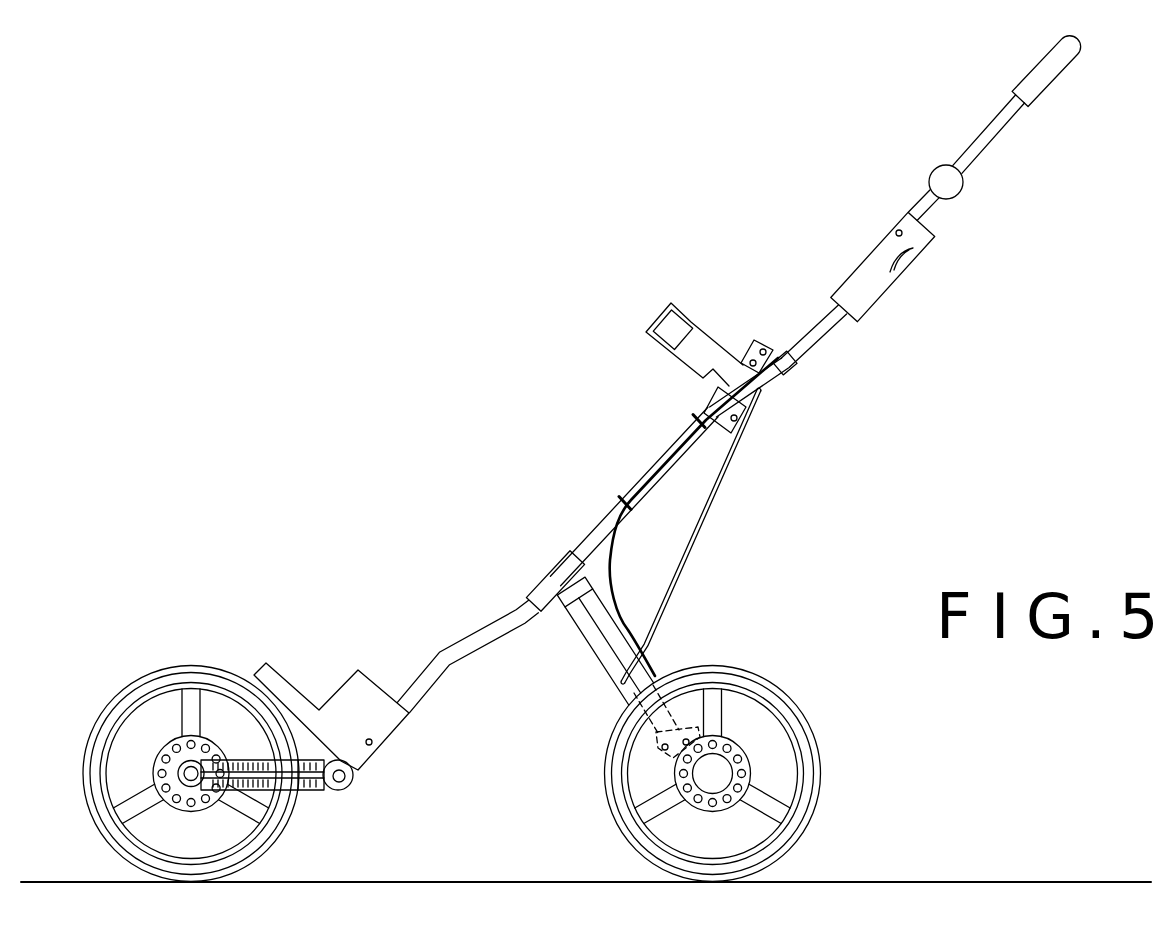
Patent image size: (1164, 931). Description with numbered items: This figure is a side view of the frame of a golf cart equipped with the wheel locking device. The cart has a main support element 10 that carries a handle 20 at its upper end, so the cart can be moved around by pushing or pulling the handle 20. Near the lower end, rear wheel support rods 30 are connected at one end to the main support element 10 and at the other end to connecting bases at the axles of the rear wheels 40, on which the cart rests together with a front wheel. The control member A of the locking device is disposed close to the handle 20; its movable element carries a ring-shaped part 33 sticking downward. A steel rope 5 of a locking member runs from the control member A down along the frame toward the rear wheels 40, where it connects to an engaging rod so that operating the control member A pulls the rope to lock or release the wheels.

The handle 20 is at (1002, 127).
The ring-shaped part 33 is at (913, 247).
The control member A is at (890, 266).
The main support element 10 is at (636, 476).
The steel rope 5 is at (613, 564).
The rear wheel support rod 30 is at (589, 632).
The rear wheel 40 is at (813, 740).